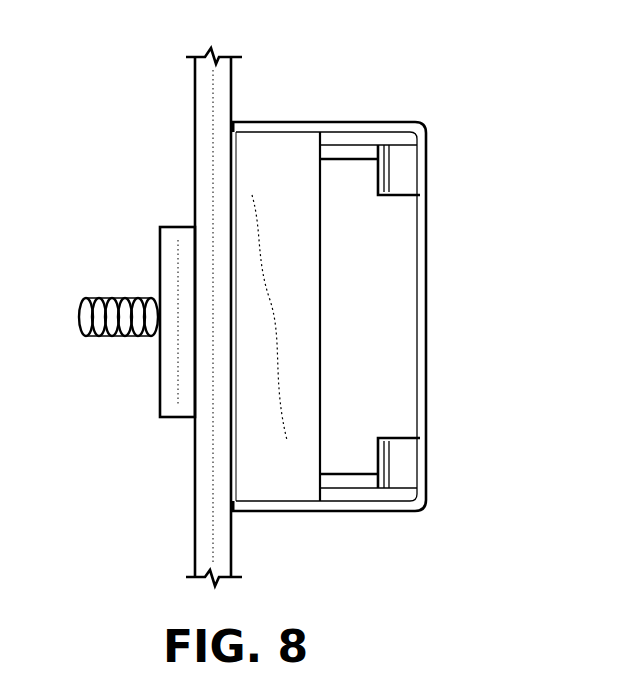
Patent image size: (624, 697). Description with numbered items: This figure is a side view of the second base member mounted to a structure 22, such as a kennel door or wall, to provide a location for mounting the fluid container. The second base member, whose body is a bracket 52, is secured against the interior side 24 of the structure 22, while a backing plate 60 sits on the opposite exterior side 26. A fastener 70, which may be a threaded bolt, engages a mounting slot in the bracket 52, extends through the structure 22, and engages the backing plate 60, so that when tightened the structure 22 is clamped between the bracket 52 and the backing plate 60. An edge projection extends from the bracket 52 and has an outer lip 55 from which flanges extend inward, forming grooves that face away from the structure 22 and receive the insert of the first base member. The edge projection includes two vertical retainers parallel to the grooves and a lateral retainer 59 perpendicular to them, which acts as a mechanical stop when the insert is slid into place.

The structure 22 is at (208, 323).
The interior side 24 is at (233, 532).
The exterior side 26 is at (197, 523).
The bracket 52 is at (275, 168).
The outer lip 55 is at (427, 362).
The lateral retainer 59 is at (387, 297).
The backing plate 60 is at (185, 262).
The fastener 70 is at (100, 340).